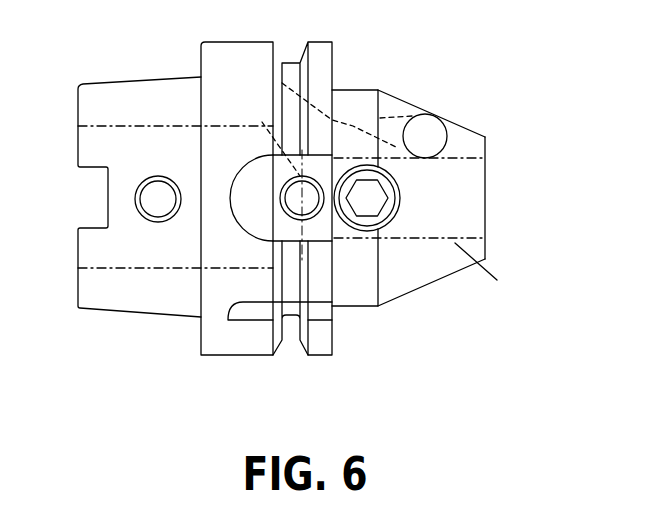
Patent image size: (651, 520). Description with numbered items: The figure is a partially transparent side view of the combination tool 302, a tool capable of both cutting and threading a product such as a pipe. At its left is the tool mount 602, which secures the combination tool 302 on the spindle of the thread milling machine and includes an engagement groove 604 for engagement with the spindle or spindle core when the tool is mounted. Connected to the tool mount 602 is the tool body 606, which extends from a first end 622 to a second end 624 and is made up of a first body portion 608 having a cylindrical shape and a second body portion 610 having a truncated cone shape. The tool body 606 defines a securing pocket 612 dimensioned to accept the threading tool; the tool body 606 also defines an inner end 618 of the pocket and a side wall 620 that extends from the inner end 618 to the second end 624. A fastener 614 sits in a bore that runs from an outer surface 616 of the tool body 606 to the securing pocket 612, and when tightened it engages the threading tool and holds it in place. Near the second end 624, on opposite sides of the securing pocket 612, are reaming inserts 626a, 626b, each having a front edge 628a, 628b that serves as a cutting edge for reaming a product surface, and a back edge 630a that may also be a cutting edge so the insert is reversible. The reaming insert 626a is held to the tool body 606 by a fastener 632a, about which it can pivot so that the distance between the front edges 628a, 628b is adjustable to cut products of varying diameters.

The combination tool 302 is at (100, 56).
The tool mount 602 is at (212, 44).
The engagement groove 604 is at (105, 197).
The tool body 606 is at (371, 89).
The first body portion 608 is at (333, 307).
The second body portion 610 is at (420, 281).
The securing pocket 612 is at (476, 271).
The fastener 614 is at (398, 212).
The outer surface 616 is at (370, 300).
The inner end 618 is at (278, 162).
The side wall 620 is at (453, 243).
The first end 622 is at (349, 86).
The second end 624 is at (489, 200).
The reaming insert 626a is at (487, 139).
The reaming insert 626b is at (497, 280).
The front edge 628a is at (497, 143).
The front edge 628b is at (492, 251).
The back edge 630a is at (282, 83).
The fastener 632a is at (447, 124).